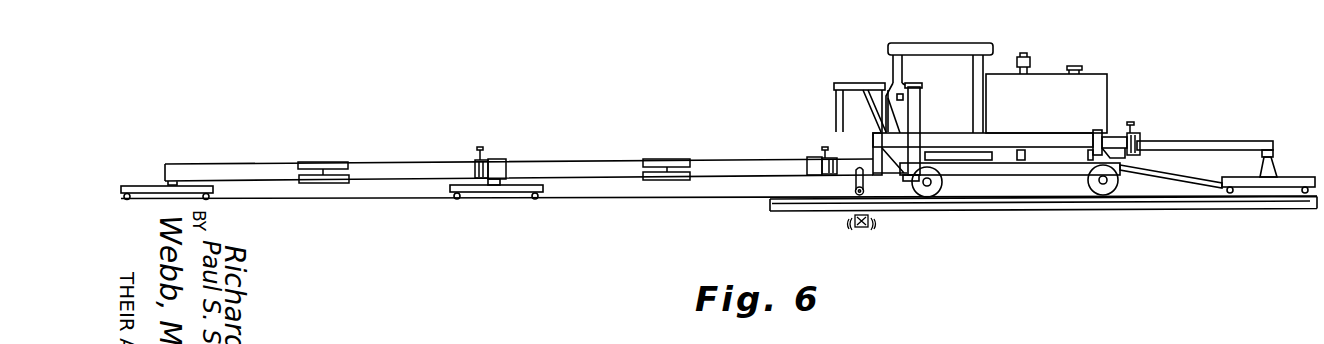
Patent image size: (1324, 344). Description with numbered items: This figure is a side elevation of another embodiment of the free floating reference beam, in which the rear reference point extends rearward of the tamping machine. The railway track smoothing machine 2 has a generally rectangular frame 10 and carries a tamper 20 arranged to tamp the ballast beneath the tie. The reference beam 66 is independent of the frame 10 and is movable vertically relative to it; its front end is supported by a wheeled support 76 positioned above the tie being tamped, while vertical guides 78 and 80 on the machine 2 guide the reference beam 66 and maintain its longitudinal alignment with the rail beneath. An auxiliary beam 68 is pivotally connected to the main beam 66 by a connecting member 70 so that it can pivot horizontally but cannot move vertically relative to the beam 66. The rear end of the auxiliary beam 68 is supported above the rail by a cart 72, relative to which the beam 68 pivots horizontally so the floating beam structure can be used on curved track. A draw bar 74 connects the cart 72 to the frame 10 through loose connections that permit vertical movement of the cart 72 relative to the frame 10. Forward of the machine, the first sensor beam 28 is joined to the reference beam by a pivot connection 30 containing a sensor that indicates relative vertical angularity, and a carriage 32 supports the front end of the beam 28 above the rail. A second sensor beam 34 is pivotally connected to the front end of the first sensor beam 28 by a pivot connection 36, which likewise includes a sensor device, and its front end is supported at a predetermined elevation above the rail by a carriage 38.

The railway track smoothing machine 2 is at (1043, 48).
The frame 10 is at (1058, 172).
The tamper 20 is at (877, 227).
The first sensor beam 28 is at (614, 162).
The pivot connection 30 is at (815, 145).
The carriage 32 is at (487, 192).
The second sensor beam 34 is at (402, 163).
The pivot connection 36 is at (489, 157).
The carriage 38 is at (146, 186).
The reference beam 66 is at (1033, 126).
The auxiliary beam 68 is at (1243, 141).
The connecting member 70 is at (1139, 133).
The cart 72 is at (1298, 177).
The draw bar 74 is at (1188, 173).
The wheeled support 76 is at (854, 190).
The vertical guide 78 is at (1096, 131).
The vertical guide 80 is at (928, 130).